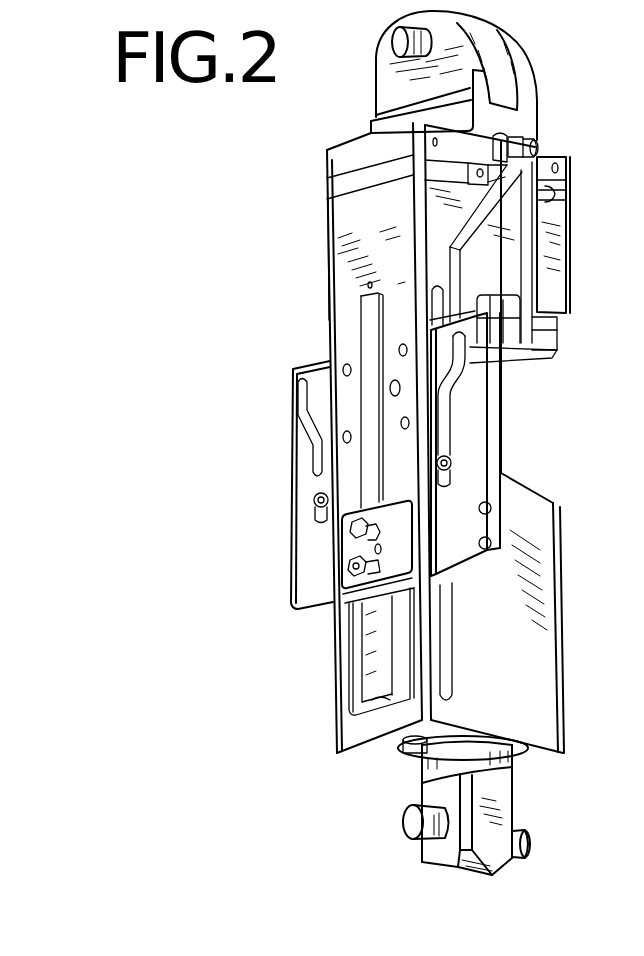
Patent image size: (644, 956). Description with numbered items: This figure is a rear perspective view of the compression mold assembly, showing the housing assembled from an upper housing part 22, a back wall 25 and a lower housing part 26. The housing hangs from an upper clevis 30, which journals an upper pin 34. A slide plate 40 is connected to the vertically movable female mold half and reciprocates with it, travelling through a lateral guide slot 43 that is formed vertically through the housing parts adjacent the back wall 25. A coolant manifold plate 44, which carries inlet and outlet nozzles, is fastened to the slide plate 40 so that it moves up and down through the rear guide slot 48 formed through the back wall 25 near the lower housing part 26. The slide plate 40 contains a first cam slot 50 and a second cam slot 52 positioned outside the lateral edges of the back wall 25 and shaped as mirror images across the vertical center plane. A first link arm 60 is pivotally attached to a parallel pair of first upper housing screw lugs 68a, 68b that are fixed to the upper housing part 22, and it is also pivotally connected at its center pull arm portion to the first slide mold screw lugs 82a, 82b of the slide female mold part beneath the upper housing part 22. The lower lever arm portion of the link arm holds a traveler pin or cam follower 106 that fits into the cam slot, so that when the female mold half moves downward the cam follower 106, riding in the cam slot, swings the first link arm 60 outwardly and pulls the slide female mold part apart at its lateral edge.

The upper housing part 22 is at (447, 206).
The back wall 25 is at (340, 257).
The lower housing part 26 is at (525, 668).
The upper clevis 30 is at (387, 78).
The upper pin 34 is at (393, 40).
The slide plate 40 is at (465, 458).
The lateral guide slot 43 is at (356, 664).
The coolant manifold plate 44 is at (352, 537).
The rear guide slot 48 is at (382, 703).
The first cam slot 50 is at (447, 435).
The second cam slot 52 is at (315, 458).
The first link arm 60 is at (553, 247).
The first upper housing screw lug 68a is at (552, 192).
The first upper housing screw lug 68b is at (536, 157).
The first slide mold screw lug 82a is at (549, 333).
The first slide mold screw lug 82b is at (500, 320).
The traveler pin or cam follower 106 is at (452, 464).